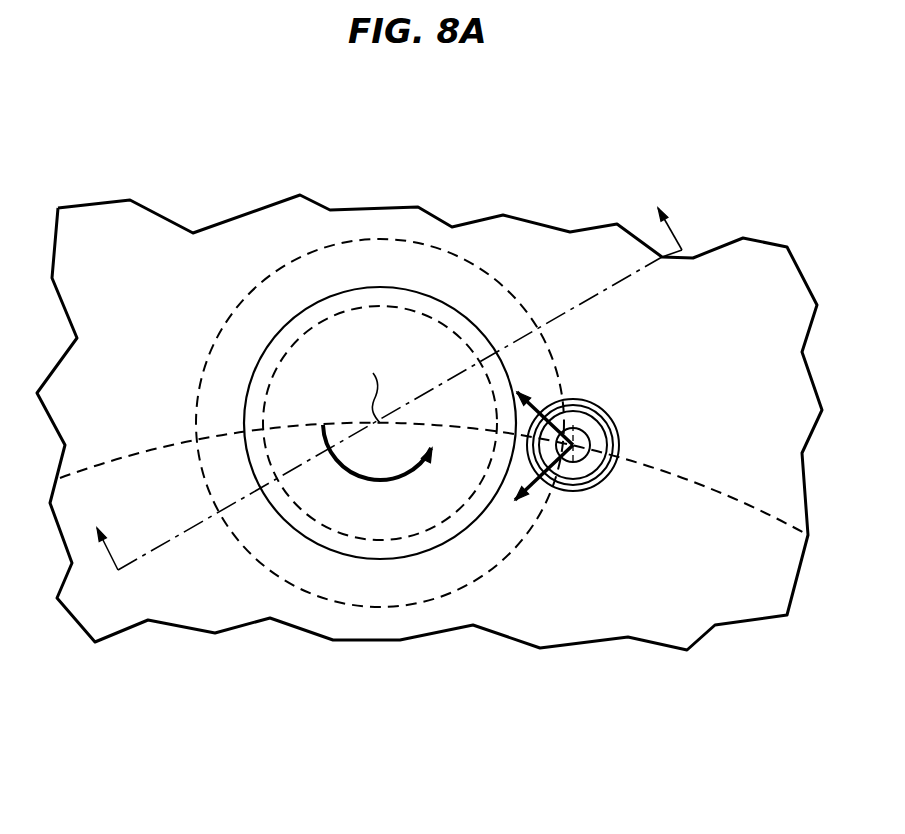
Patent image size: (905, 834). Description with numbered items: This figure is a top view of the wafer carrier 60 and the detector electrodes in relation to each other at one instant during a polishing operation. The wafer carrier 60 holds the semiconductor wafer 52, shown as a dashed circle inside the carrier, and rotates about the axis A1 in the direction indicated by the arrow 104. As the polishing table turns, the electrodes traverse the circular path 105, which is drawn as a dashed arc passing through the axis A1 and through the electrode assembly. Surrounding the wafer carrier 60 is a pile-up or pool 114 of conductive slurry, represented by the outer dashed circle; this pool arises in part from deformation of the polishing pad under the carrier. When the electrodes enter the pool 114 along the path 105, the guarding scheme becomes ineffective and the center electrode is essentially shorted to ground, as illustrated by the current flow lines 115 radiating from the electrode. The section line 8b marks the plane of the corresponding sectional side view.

The pool of slurry 114 is at (368, 262).
The wafer carrier 60 is at (252, 378).
The semiconductor wafer 52 is at (293, 410).
The arrow 104 is at (380, 480).
The circular path 105 is at (677, 478).
The current flow lines 115 is at (566, 414).
The axis A1 is at (374, 381).
The section line 8b is at (382, 376).